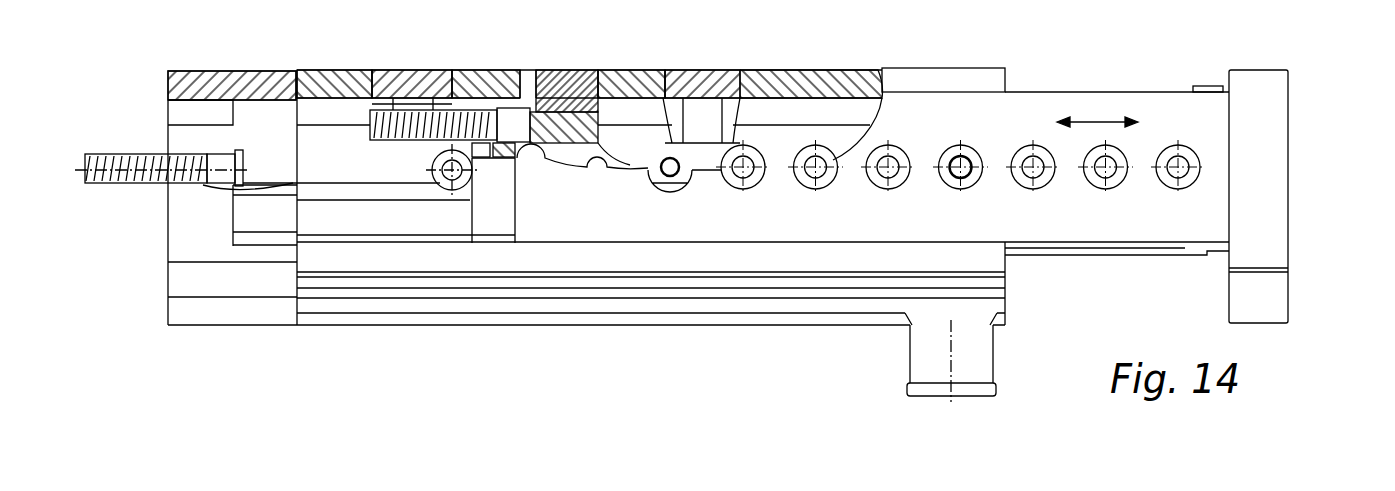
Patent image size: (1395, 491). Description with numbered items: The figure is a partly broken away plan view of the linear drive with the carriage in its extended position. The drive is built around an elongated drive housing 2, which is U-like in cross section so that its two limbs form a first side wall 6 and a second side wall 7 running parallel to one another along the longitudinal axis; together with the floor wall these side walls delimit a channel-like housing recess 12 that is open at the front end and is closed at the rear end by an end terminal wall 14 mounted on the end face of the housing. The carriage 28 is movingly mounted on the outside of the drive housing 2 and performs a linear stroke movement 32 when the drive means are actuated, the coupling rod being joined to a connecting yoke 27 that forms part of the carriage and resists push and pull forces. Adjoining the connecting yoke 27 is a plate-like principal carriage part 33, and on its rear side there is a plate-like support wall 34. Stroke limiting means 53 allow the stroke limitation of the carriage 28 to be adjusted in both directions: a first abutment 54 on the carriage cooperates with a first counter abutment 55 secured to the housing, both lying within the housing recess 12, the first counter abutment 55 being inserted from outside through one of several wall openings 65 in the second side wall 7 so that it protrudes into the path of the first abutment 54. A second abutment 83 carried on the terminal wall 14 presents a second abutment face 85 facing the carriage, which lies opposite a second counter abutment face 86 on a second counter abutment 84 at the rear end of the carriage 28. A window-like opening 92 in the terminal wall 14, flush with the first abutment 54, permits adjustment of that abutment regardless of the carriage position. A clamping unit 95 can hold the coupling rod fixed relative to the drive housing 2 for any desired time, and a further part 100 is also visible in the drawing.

The drive housing 2 is at (335, 78).
The first side wall 6 is at (785, 300).
The second side wall 7 is at (799, 82).
The channel-like housing recess 12 is at (827, 130).
The end terminal wall 14 is at (233, 78).
The connecting yoke 27 is at (1277, 183).
The carriage 28 is at (1071, 224).
The linear stroke movement 32 is at (1097, 122).
The plate-like principal carriage part 33 is at (658, 233).
The support wall 34 is at (495, 228).
The stroke limiting means 53 is at (207, 144).
The first abutment 54 is at (463, 110).
The first counter abutment 55 is at (600, 143).
The wall openings 65 is at (372, 100).
The second abutment 83 is at (103, 182).
The second counter abutment 84 is at (470, 173).
The second abutment face 85 is at (250, 160).
The second counter abutment face 86 is at (462, 173).
The window-like opening 92 is at (207, 110).
The clamping unit 95 is at (893, 368).
The cover plate 100 is at (1055, 46).